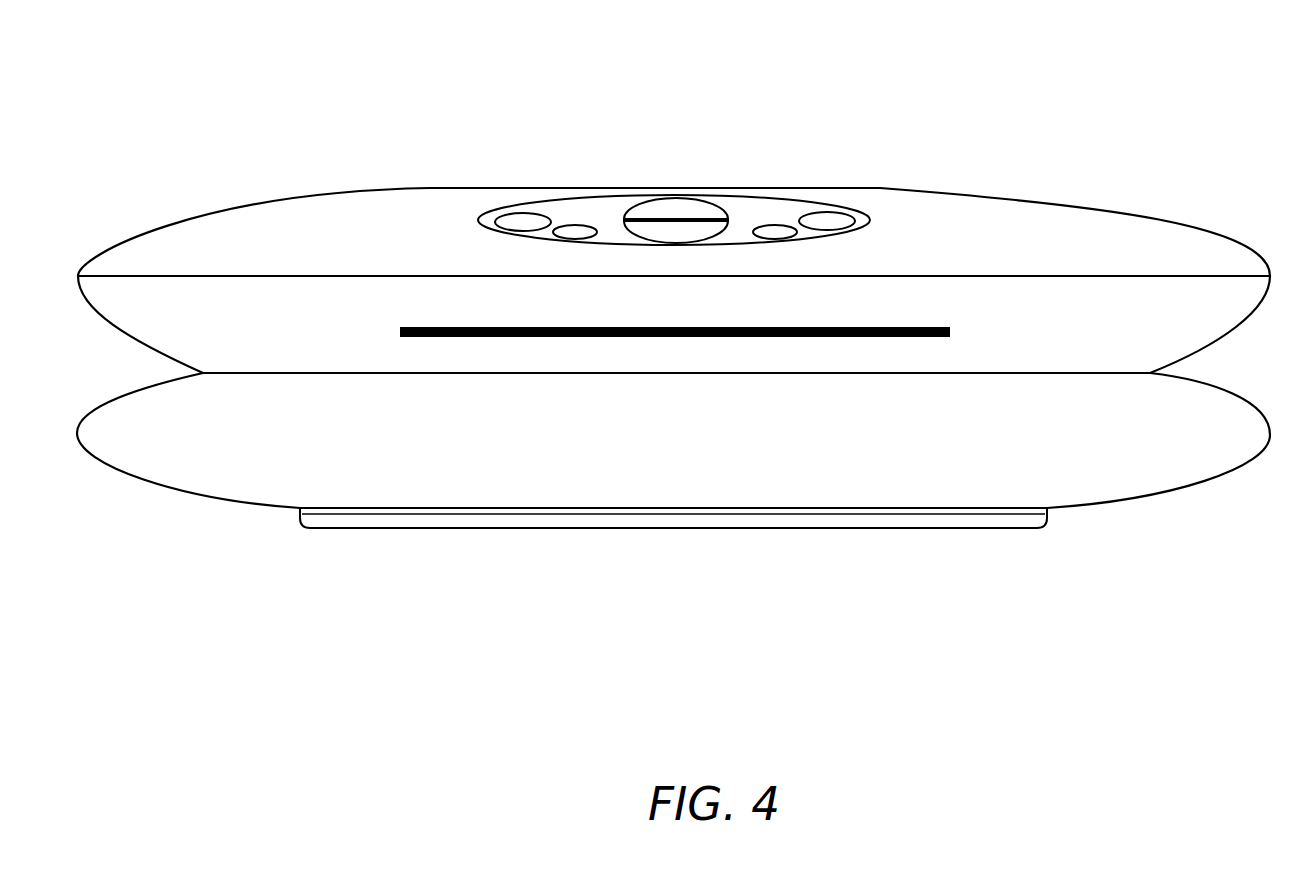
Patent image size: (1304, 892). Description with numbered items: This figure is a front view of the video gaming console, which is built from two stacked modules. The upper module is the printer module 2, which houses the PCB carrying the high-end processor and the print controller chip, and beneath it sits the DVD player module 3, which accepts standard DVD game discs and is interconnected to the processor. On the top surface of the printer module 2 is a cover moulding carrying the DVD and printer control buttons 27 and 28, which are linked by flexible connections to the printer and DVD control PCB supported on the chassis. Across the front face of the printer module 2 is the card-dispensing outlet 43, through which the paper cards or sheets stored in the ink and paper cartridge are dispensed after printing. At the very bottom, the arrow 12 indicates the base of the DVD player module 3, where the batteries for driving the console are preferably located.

The printer module 2 is at (1185, 243).
The DVD player module 3 is at (1197, 412).
The batteries location 12 is at (778, 527).
The DVD control button 27 is at (767, 207).
The printer control button 28 is at (592, 214).
The card-dispensing outlet 43 is at (400, 331).